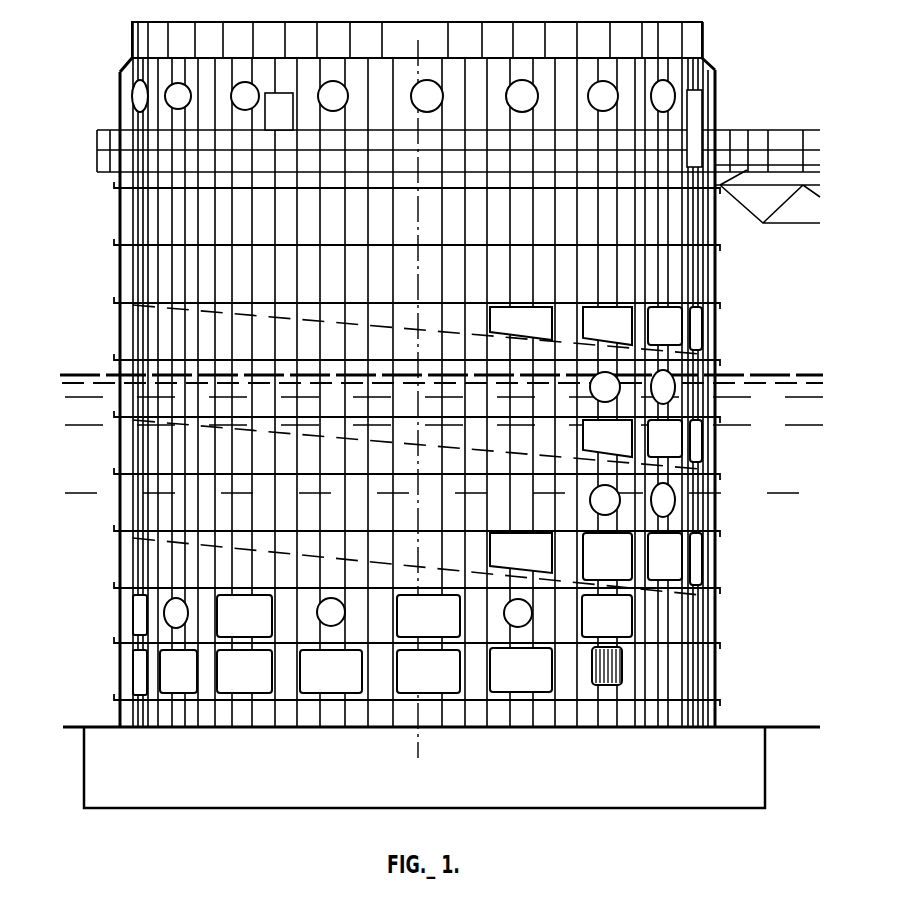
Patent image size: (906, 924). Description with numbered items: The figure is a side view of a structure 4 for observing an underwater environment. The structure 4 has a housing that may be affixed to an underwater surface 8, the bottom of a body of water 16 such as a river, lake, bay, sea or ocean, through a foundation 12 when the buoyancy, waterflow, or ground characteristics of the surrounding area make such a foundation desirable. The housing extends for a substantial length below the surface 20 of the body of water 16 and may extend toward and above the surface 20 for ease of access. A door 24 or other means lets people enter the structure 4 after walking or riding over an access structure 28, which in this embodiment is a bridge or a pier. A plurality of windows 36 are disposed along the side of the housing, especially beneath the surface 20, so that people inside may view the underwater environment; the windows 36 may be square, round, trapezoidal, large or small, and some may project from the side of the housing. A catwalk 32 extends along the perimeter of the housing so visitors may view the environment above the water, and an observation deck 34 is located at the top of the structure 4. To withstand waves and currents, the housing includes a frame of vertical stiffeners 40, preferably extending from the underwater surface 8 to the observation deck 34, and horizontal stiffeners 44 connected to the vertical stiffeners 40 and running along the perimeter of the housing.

The structure 4 is at (724, 60).
The underwater surface 8 is at (798, 727).
The foundation 12 is at (457, 777).
The body of water 16 is at (779, 536).
The surface 20 is at (762, 375).
The door 24 is at (695, 118).
The access structure 28 is at (783, 128).
The catwalk 32 is at (100, 132).
The observation deck 34 is at (184, 22).
The windows 36 is at (531, 105).
The vertical stiffeners 40 is at (275, 80).
The horizontal stiffeners 44 is at (114, 245).